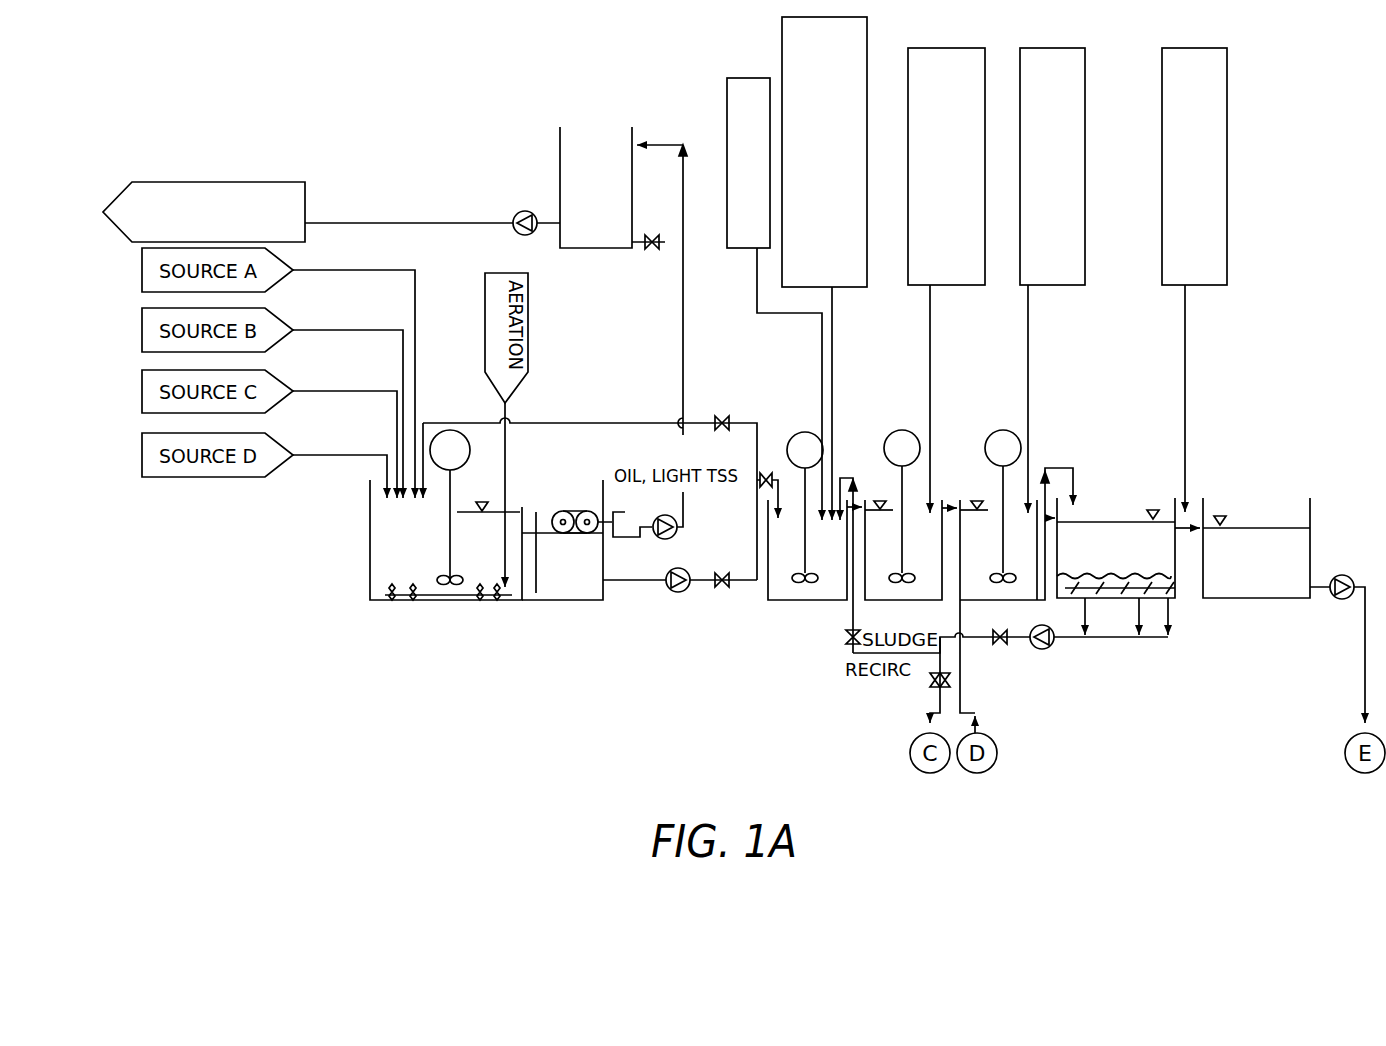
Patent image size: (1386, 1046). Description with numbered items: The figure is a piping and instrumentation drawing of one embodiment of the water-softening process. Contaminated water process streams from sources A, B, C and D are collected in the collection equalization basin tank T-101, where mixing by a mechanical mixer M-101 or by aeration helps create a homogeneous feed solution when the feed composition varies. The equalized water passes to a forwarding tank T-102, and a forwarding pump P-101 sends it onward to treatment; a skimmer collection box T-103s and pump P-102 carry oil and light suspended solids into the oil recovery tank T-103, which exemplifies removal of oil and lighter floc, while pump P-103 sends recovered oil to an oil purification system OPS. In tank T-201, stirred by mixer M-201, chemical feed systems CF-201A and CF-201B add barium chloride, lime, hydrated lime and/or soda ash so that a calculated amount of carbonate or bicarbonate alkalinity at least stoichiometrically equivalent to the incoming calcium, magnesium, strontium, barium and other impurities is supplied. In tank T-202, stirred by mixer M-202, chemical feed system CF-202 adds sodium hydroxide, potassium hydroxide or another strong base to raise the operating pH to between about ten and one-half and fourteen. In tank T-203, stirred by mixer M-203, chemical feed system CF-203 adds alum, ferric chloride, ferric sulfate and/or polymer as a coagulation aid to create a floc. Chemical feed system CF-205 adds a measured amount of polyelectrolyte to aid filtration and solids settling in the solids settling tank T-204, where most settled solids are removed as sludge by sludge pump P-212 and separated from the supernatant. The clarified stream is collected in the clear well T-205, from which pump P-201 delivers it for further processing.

The collection equalization basin tank T-101 is at (440, 587).
The forwarding tank T-102 is at (568, 576).
The oil recovery tank T-103 is at (607, 224).
The oil/light TSS skimmer collection box T-103s is at (625, 536).
The oil purification pump (P=103) P-103 is at (432, 234).
The oil/light TSS pump P-102 is at (686, 526).
The forwarding pump P-101 is at (687, 620).
The mixer for basin T-101 M-101 is at (450, 507).
The mixer M-201 is at (805, 507).
The mixer M-202 is at (902, 506).
The mixer M-203 is at (1003, 506).
The tank T-201 is at (809, 563).
The tank T-202 is at (911, 564).
The tank T-203 is at (1016, 600).
The tank T-204 is at (1128, 580).
The settling tank (clear well) T-205 is at (1256, 563).
The clear well discharge pump P-201 is at (1337, 649).
The sludge pump P-212 is at (1091, 649).
The chemical feed system CF-201A is at (765, 299).
The chemical feed system CF-201B is at (842, 268).
The chemical feed system CF-202 is at (965, 280).
The chemical feed system CF-203 is at (1069, 280).
The chemical feed system CF-205 is at (1214, 280).
The oil purification system OPS is at (204, 212).